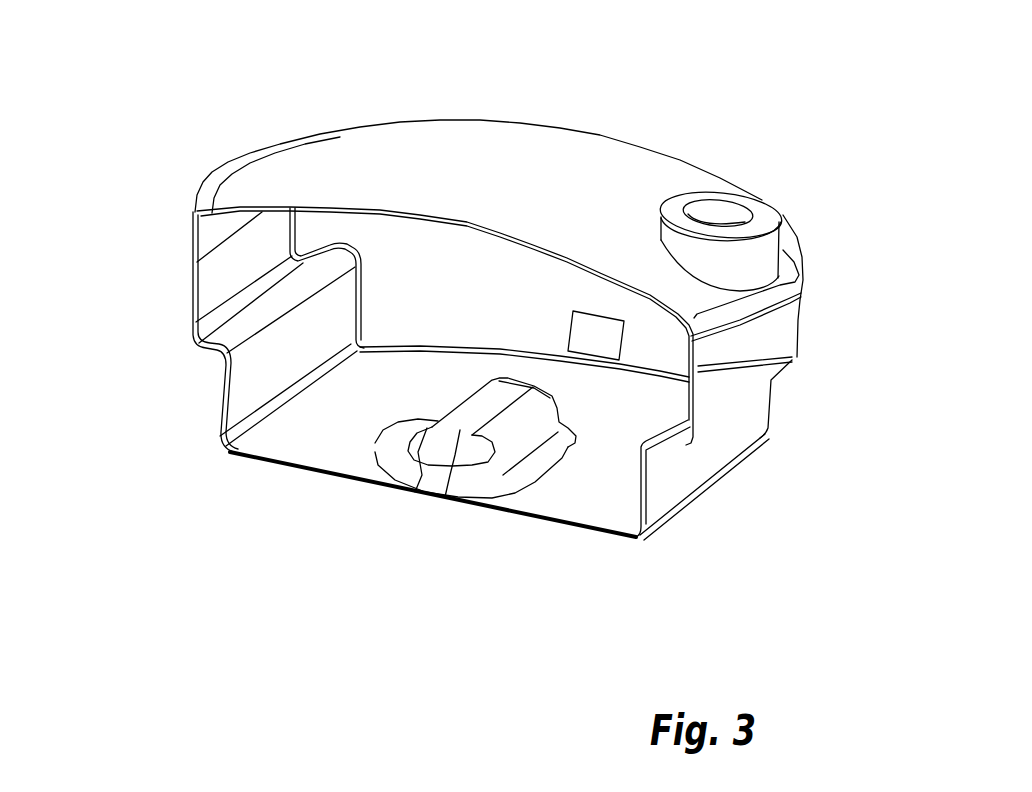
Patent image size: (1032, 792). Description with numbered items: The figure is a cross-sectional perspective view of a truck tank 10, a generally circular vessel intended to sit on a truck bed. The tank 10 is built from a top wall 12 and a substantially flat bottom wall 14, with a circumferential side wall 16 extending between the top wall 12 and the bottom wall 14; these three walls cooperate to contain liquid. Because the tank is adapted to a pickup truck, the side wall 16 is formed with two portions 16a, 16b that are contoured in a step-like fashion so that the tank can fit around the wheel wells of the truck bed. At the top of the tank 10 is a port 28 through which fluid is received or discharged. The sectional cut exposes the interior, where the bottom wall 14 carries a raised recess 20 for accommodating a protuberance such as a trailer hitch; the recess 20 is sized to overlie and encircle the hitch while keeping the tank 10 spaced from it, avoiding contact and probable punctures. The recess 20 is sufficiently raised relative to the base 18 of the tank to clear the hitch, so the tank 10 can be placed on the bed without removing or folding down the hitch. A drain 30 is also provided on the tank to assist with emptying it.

The truck tank 10 is at (550, 111).
The top wall 12 is at (405, 120).
The bottom wall 14 is at (530, 523).
The side wall 16 is at (497, 292).
The side wall portion 16a is at (718, 444).
The side wall portion 16b is at (218, 396).
The base 18 is at (390, 409).
The raised recess 20 is at (383, 438).
The port 28 is at (763, 202).
The drain 30 is at (612, 351).